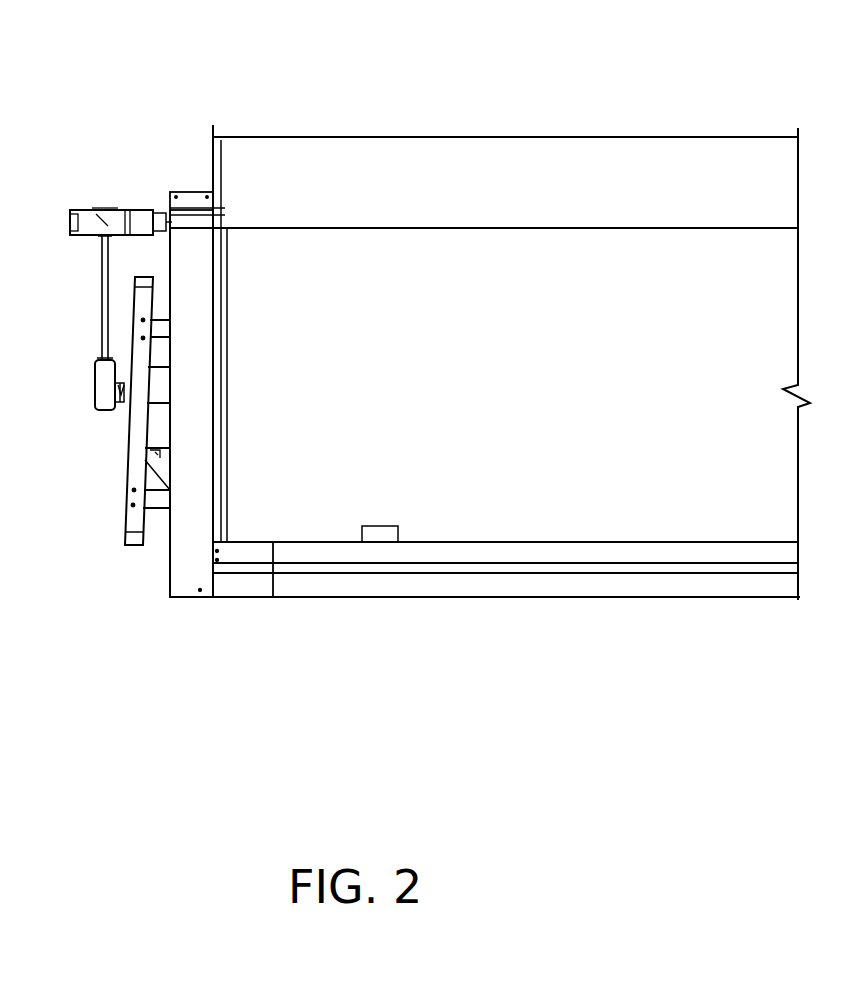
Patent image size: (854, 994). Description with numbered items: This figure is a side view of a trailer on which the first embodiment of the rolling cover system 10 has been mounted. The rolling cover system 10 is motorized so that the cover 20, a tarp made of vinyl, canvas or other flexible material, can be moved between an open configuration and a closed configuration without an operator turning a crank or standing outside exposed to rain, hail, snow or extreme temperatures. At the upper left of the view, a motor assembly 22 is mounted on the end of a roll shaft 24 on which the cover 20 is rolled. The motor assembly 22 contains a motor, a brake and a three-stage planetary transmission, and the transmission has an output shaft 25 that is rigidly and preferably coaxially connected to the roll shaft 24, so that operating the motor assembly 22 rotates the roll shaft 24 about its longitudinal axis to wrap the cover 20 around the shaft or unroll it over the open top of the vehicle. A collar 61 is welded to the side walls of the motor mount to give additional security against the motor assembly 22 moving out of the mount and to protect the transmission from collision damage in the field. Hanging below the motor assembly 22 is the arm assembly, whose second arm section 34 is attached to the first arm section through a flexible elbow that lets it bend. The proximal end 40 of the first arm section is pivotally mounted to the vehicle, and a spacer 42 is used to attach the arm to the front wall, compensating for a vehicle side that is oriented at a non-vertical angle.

The rolling cover system 10 is at (474, 62).
The cover 20 is at (527, 192).
The motor assembly 22 is at (100, 222).
The roll shaft 24 is at (187, 220).
The output shaft 25 is at (167, 233).
The second arm section 34 is at (97, 302).
The proximal end 40 is at (100, 398).
The spacer 42 is at (117, 427).
The collar 61 is at (143, 207).